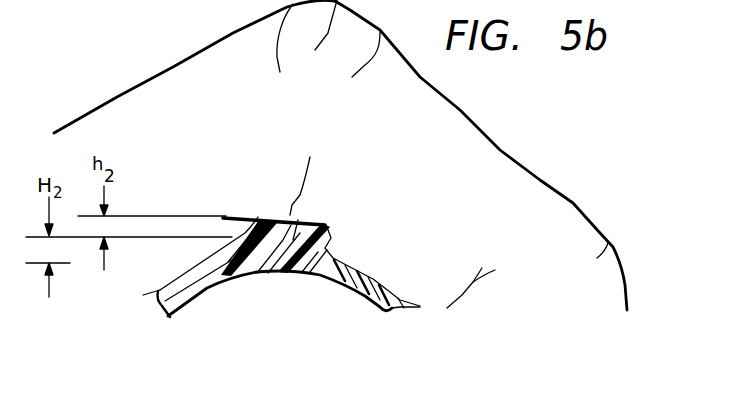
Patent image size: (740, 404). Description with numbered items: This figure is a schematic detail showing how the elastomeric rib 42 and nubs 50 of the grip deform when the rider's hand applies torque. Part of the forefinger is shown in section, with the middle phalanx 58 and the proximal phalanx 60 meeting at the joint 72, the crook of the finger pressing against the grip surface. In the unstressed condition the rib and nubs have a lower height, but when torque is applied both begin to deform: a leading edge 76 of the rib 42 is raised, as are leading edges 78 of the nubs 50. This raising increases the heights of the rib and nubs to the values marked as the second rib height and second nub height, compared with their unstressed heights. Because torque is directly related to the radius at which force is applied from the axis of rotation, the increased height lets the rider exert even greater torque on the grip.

The rib 42 is at (307, 266).
The nubs 50 is at (282, 272).
The middle phalanx 58 is at (448, 185).
The proximal phalanx 60 is at (199, 140).
The joint 72 is at (331, 113).
The leading edge of the rib 76 is at (237, 277).
The leading edges of the nubs 78 is at (273, 274).